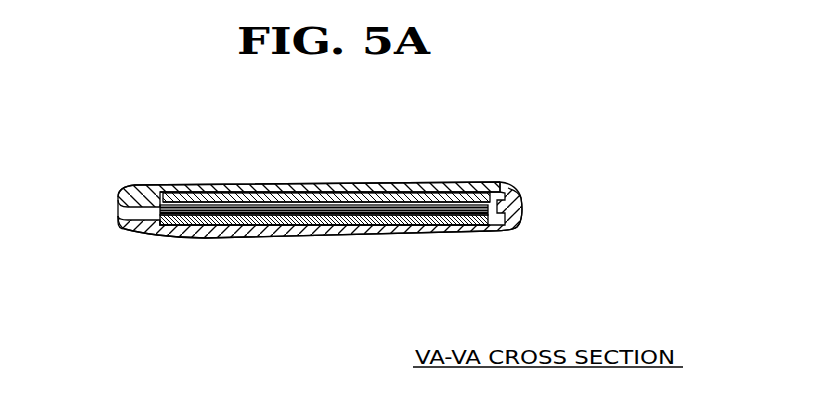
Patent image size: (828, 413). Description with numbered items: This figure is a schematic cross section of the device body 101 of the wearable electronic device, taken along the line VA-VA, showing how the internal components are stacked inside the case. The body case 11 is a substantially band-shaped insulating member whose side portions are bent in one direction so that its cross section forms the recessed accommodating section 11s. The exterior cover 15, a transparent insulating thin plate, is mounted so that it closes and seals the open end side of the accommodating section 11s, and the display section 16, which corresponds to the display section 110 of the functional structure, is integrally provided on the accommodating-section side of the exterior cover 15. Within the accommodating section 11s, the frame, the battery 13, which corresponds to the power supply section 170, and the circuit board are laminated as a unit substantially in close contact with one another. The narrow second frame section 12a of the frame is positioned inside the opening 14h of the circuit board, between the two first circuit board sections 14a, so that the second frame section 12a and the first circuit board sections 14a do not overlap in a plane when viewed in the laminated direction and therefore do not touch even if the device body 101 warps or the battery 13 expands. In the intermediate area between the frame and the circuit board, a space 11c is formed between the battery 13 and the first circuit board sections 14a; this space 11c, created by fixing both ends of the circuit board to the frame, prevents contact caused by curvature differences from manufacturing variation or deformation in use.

The device body 101 is at (124, 129).
The body case 11 is at (428, 182).
The space 11c is at (239, 194).
The accommodating section 11s is at (489, 191).
The second frame section 12a is at (334, 182).
The battery 13 is at (316, 145).
The power supply section 170 is at (199, 195).
The first circuit board sections 14a is at (239, 222).
The opening 14h is at (343, 220).
The exterior cover 15 is at (182, 237).
The display section 16 is at (333, 257).
The display section 110 is at (480, 234).